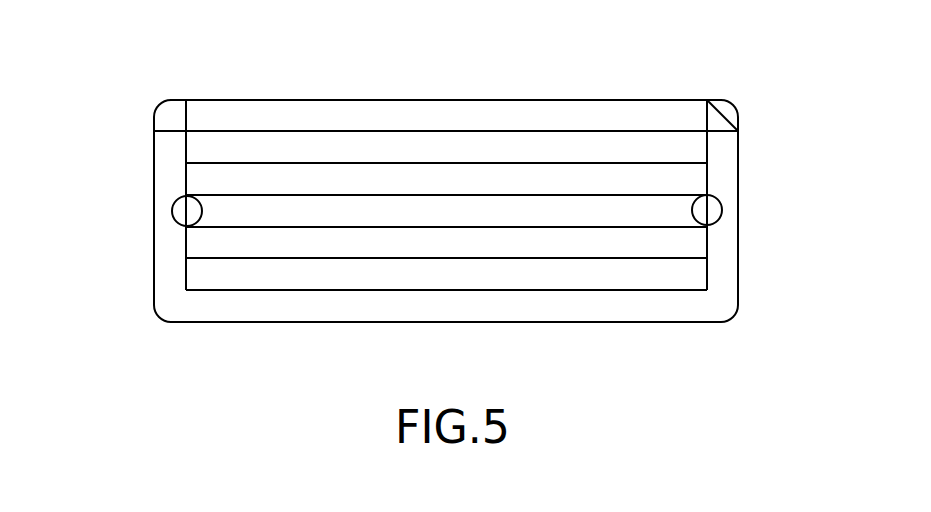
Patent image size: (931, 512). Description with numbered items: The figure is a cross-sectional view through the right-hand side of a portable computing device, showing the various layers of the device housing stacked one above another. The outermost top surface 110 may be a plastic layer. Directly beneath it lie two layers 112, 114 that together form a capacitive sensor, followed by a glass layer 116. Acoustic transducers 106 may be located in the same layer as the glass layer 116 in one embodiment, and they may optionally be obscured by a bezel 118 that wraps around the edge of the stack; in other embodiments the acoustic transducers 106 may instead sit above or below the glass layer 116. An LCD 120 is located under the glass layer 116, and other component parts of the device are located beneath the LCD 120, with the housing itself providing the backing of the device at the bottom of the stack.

The acoustic transducer 106 is at (172, 210).
The top surface 110 is at (451, 173).
The capacitive sensor layer 112 is at (693, 147).
The capacitive sensor layer 114 is at (693, 180).
The glass layer 116 is at (493, 177).
The bezel 118 is at (168, 110).
The LCD 120 is at (693, 242).